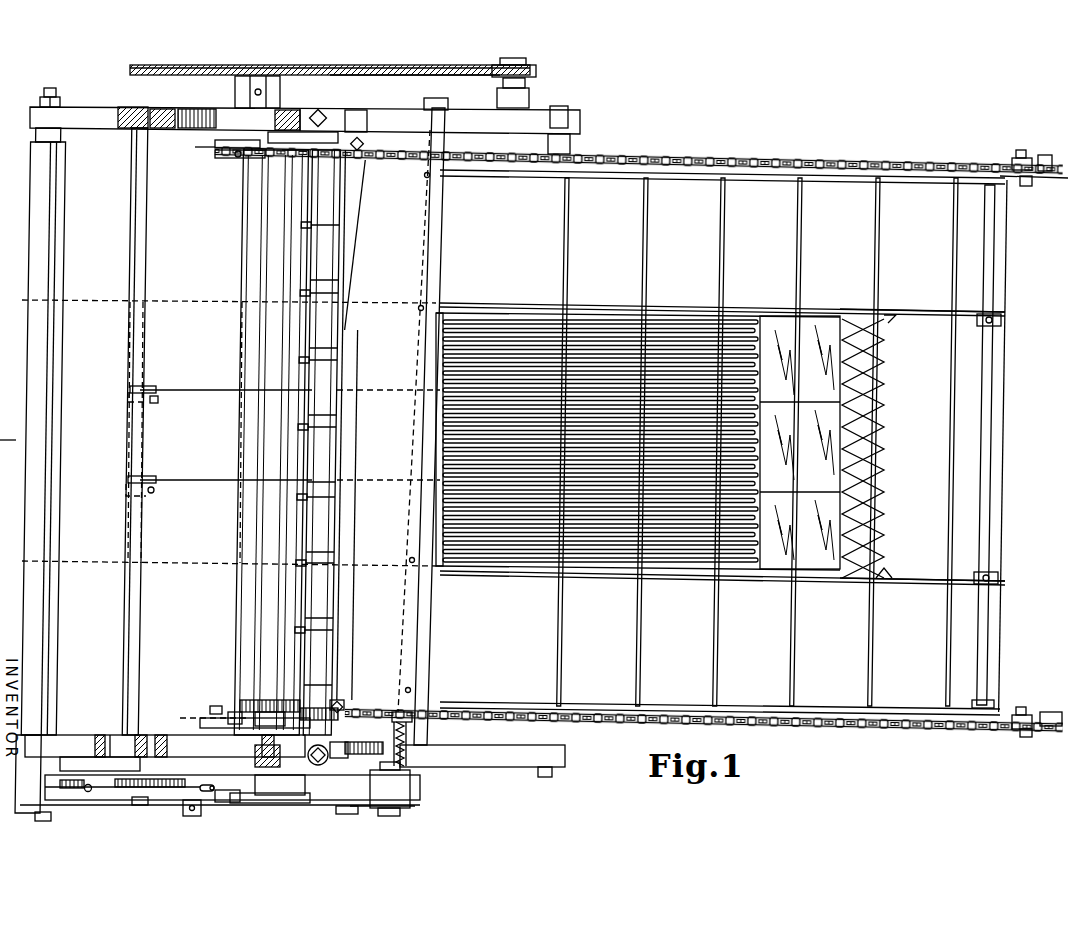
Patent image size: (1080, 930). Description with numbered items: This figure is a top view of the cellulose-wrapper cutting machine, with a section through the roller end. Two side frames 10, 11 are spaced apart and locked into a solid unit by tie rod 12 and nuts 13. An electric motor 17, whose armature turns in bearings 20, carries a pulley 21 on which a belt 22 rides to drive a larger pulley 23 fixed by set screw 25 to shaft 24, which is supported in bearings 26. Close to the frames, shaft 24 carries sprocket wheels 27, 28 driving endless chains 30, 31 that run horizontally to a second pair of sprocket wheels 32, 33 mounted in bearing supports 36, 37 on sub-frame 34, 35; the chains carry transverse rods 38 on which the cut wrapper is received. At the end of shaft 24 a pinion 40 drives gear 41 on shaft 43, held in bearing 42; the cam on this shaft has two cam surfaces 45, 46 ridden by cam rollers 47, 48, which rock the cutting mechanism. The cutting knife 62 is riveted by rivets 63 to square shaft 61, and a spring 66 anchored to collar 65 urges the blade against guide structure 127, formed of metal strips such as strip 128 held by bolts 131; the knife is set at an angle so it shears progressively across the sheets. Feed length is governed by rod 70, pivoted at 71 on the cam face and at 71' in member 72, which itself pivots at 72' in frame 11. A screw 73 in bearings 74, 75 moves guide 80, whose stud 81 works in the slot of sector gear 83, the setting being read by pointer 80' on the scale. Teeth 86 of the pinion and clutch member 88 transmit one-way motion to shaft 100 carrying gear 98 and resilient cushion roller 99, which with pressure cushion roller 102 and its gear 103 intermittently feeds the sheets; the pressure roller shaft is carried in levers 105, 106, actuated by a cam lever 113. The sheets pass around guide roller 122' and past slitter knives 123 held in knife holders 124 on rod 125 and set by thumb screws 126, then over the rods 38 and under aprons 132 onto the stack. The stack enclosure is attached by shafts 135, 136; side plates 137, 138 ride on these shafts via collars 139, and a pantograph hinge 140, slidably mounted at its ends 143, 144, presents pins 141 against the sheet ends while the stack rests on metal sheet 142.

The side frame 10 is at (545, 120).
The side frame 11 is at (528, 764).
The tie rod 12 is at (52, 96).
The nuts 13 is at (60, 106).
The electric motor 17 is at (575, 143).
The bearings 20 is at (528, 100).
The pulley 21 is at (530, 74).
The belt 22 is at (415, 59).
The pulley 23 is at (318, 66).
The shaft 24 is at (217, 151).
The set screw 25 is at (262, 92).
The bearings 26 is at (240, 105).
The sprocket wheel 27 is at (215, 160).
The sprocket wheel 28 is at (210, 699).
The endless chain 30 is at (778, 157).
The endless chain 31 is at (620, 724).
The sprocket wheel 32 is at (1060, 725).
The sprocket wheel 33 is at (1060, 168).
The sub-frame 34 is at (1046, 180).
The sub-frame 35 is at (1022, 712).
The bearing support 36 is at (1022, 160).
The bearing support 37 is at (1014, 732).
The rods 38 is at (648, 272).
The pinion 40 is at (235, 712).
The gear 41 is at (364, 743).
The bearing 42 is at (326, 758).
The shaft 43 is at (348, 752).
The cam surface 45 is at (394, 816).
The cam surface 46 is at (294, 785).
The cam roller 47 is at (378, 808).
The cam roller 48 is at (416, 804).
The square shaft 61 is at (443, 148).
The cutting knife 62 is at (438, 216).
The rivets 63 is at (412, 688).
The collar 65 is at (428, 710).
The spring 66 is at (420, 728).
The rod 70 is at (183, 806).
The pivot 71 is at (346, 817).
The pivot 71' is at (132, 812).
The member 72 is at (211, 784).
The pivot 72' is at (244, 809).
The screw 73 is at (88, 794).
The bearing 74 is at (66, 792).
The bearing 75 is at (209, 794).
The guide 80 is at (100, 738).
The pointer 80' is at (138, 799).
The stud 81 is at (112, 735).
The sector gear 83 is at (76, 734).
The teeth 86 is at (256, 754).
The clutch member 88 is at (298, 802).
The gear 98 is at (255, 714).
The resilient cushion roller 99 is at (256, 222).
The shaft 100 is at (286, 169).
The pressure cushion roller 102 is at (312, 383).
The gear 103 is at (342, 704).
The lever 105 is at (284, 699).
The lever 106 is at (318, 128).
The cam lever 113 is at (198, 148).
The guide roller 122' is at (63, 470).
The slitter knives 123 is at (150, 385).
The knife holder 124 is at (142, 400).
The rod 125 is at (148, 266).
The thumb screw 126 is at (156, 396).
The guide structure 127 is at (310, 218).
The metal strip 128 is at (357, 142).
The bolts 131 is at (363, 144).
The aprons 132 is at (444, 320).
The shaft 135 is at (997, 240).
The shaft 136 is at (435, 270).
The side plate 137 is at (898, 309).
The side plate 138 is at (920, 578).
The collars 139 is at (1003, 320).
The pantograph hinge 140 is at (886, 428).
The pins 141 is at (838, 452).
The metal sheet 142 is at (996, 656).
The hinge end 143 is at (892, 319).
The hinge end 144 is at (890, 580).